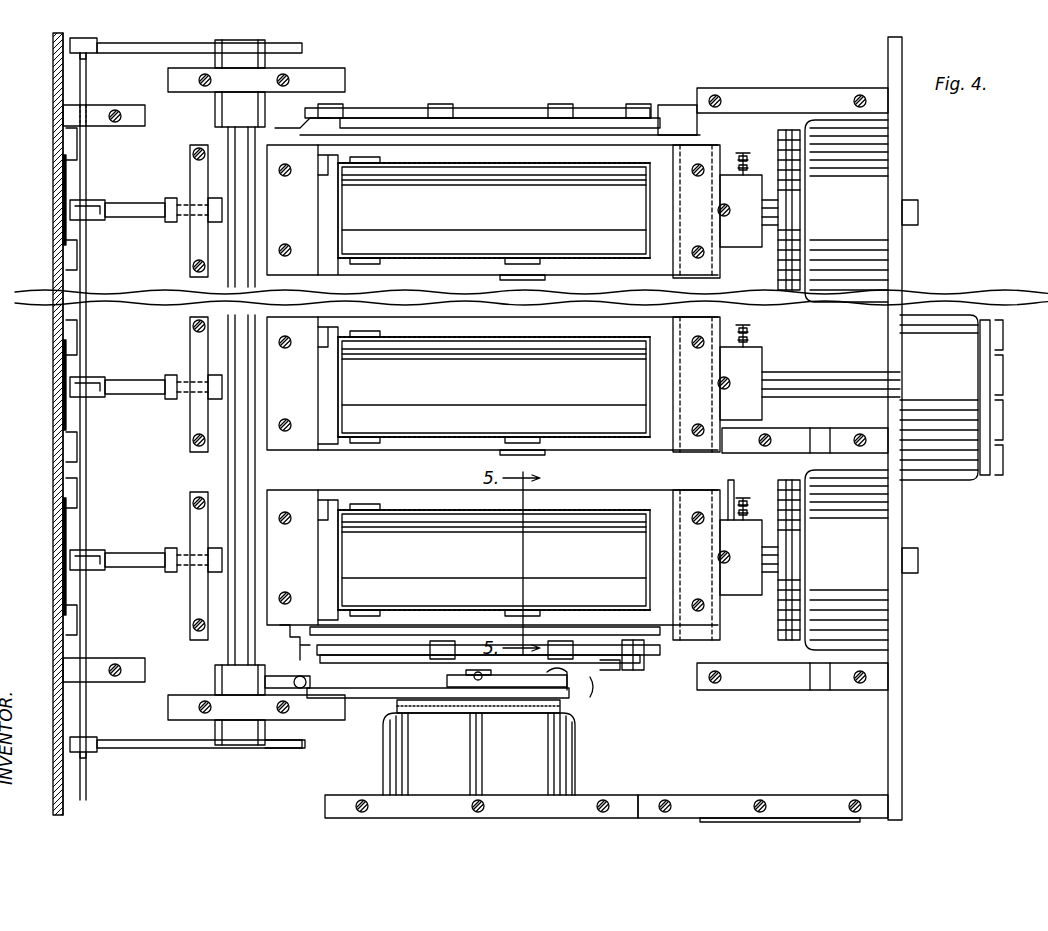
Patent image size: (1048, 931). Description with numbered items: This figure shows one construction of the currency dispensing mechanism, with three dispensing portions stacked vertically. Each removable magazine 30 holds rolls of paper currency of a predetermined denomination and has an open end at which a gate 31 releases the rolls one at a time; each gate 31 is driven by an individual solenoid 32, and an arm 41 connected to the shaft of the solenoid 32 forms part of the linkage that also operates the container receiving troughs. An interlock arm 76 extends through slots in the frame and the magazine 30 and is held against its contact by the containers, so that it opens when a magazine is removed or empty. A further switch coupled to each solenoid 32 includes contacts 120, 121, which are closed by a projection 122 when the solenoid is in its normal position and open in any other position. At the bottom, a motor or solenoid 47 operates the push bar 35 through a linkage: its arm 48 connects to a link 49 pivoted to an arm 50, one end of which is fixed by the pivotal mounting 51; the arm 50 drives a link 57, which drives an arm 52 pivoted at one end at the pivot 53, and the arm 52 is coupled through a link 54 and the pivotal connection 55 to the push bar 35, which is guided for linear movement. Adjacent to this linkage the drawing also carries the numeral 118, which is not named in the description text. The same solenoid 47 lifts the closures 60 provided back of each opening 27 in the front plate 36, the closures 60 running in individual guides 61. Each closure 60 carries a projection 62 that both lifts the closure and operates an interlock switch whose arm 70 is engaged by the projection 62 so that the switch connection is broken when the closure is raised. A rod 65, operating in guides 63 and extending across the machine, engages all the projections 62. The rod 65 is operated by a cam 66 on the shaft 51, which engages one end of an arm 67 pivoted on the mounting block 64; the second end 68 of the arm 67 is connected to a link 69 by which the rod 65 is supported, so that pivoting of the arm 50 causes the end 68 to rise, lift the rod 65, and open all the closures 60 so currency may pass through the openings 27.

The opening 27 is at (52, 245).
The front plate 36 is at (52, 478).
The closure 60 is at (63, 280).
The guide 61 is at (77, 145).
The rod 65 is at (88, 592).
The second end of arm 68 is at (135, 53).
The link 69 is at (52, 45).
The guide 63 is at (63, 116).
The arm 70 is at (135, 203).
The projection 62 is at (95, 220).
The pivotal mounting 51 is at (255, 201).
The mounting block 64 is at (325, 720).
The cam 66 is at (250, 745).
The arm 67 is at (300, 748).
The removable magazine 30 is at (338, 538).
The gate 31 is at (468, 228).
The arm 76 is at (520, 264).
The push bar 35 is at (683, 663).
The contact 120 is at (745, 153).
The contact 121 is at (748, 159).
The projection 122 is at (748, 167).
The arm 41 is at (733, 482).
The solenoid 32 is at (880, 160).
The motor or solenoid 47 is at (575, 750).
The link 49 is at (375, 698).
The arm 48 is at (567, 677).
The link 54 is at (610, 688).
The pivotal connection 55 is at (636, 672).
The link 57 is at (398, 655).
The arm 52 is at (355, 660).
The pivot 53 is at (298, 636).
The arm 50 is at (285, 678).
The bracket 118 is at (610, 665).